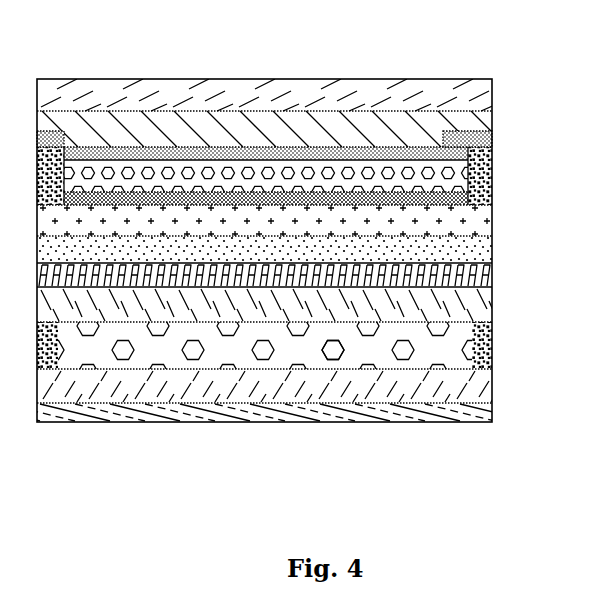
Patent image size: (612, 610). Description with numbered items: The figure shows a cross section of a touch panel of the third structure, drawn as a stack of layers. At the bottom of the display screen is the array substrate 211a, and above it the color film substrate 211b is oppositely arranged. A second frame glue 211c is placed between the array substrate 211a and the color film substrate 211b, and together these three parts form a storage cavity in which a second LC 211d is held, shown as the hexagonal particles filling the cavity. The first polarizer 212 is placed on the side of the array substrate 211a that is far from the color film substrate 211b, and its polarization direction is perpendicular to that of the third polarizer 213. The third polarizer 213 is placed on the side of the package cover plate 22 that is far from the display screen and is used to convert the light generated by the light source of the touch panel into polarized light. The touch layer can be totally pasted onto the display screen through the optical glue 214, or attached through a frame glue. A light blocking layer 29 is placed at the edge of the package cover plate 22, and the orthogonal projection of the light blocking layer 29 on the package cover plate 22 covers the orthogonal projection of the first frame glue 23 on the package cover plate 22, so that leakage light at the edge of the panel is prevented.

The package cover plate 22 is at (187, 128).
The light blocking layer 29 is at (458, 145).
The first frame glue 23 is at (475, 170).
The optical glue 214 is at (482, 245).
The first polarizer 212 is at (466, 270).
The color film substrate 211b is at (470, 298).
The second frame glue 211c is at (476, 345).
The second LC 211d is at (333, 352).
The array substrate 211a is at (474, 384).
The third polarizer 213 is at (407, 408).